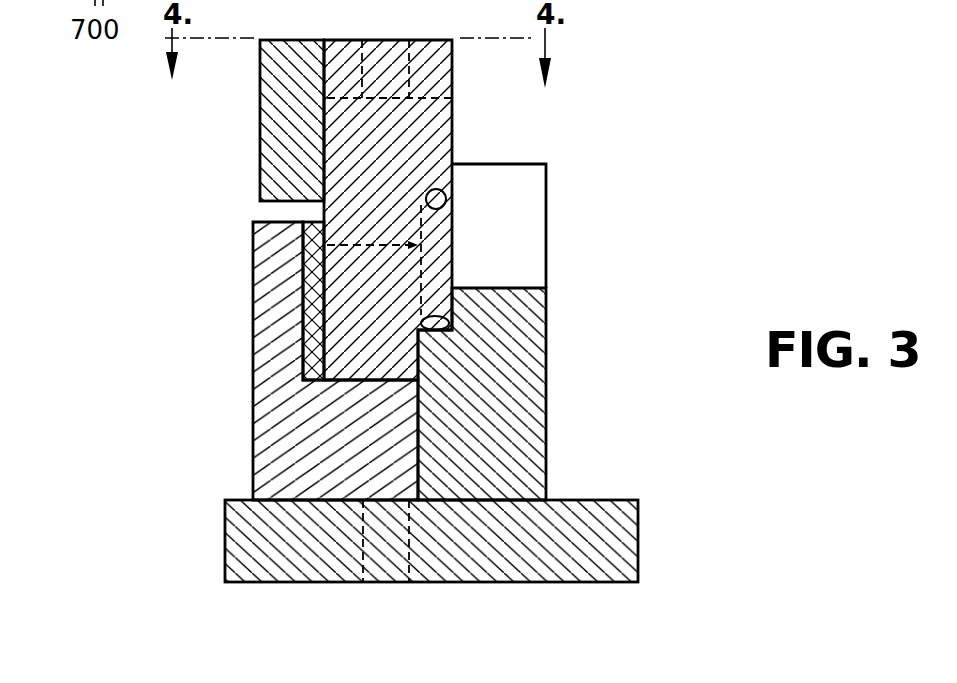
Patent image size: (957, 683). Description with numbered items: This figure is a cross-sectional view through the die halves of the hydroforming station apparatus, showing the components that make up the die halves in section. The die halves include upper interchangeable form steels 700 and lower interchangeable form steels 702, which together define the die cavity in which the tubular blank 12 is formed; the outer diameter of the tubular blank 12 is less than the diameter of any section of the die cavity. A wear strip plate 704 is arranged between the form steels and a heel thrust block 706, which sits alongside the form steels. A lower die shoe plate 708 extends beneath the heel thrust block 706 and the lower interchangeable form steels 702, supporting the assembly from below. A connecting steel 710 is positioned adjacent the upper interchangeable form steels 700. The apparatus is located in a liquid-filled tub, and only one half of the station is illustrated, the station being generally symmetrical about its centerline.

The upper interchangeable form steels 700 is at (452, 77).
The lower interchangeable form steels 702 is at (546, 303).
The wear strip plate 704 is at (310, 281).
The heel thrust block 706 is at (253, 421).
The lower die shoe plate 708 is at (601, 500).
The connecting steel 710 is at (261, 103).
The tubular blank 12 is at (452, 197).